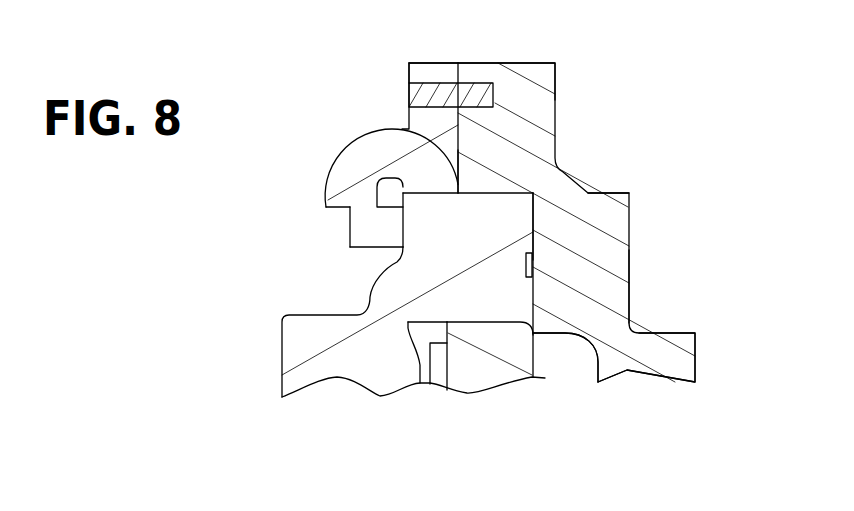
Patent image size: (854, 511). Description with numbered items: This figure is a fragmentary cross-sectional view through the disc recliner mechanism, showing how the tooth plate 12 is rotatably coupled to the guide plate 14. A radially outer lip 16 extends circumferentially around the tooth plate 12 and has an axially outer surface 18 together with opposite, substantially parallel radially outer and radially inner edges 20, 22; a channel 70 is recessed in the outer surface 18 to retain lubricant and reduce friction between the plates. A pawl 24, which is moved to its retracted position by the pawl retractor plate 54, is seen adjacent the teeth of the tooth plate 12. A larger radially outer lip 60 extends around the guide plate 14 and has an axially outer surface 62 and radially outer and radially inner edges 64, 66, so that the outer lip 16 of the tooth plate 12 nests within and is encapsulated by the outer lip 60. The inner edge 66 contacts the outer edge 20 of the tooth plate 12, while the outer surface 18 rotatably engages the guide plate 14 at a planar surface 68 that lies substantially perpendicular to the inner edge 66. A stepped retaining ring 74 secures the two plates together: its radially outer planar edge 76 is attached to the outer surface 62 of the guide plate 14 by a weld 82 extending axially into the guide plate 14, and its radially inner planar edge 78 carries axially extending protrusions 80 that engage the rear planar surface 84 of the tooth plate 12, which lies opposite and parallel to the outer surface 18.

The tooth plate 12 is at (268, 321).
The guide plate 14 is at (570, 167).
The radially outer lip 16 is at (435, 305).
The axially outer surface 18 is at (508, 297).
The radially outer edge 20 is at (423, 205).
The radially inner edge 22 is at (483, 311).
The pawl 24 is at (537, 367).
The pawl retractor plate 54 is at (447, 368).
The radially outer lip 60 is at (520, 137).
The axially outer surface 62 is at (463, 148).
The radially outer edge 64 is at (507, 63).
The radially inner edge 66 is at (478, 185).
The planar surface 68 is at (533, 204).
The channel 70 is at (530, 264).
The stepped retaining ring 74 is at (340, 137).
The radially outer planar edge 76 is at (432, 63).
The radially inner planar edge 78 is at (338, 183).
The axially extending protrusions 80 is at (350, 242).
The weld 82 is at (493, 100).
The rear planar surface 84 is at (417, 232).